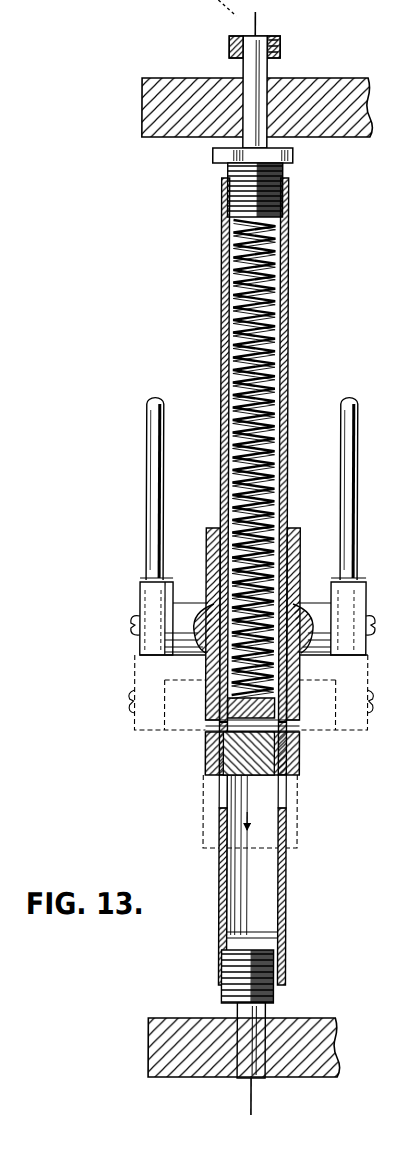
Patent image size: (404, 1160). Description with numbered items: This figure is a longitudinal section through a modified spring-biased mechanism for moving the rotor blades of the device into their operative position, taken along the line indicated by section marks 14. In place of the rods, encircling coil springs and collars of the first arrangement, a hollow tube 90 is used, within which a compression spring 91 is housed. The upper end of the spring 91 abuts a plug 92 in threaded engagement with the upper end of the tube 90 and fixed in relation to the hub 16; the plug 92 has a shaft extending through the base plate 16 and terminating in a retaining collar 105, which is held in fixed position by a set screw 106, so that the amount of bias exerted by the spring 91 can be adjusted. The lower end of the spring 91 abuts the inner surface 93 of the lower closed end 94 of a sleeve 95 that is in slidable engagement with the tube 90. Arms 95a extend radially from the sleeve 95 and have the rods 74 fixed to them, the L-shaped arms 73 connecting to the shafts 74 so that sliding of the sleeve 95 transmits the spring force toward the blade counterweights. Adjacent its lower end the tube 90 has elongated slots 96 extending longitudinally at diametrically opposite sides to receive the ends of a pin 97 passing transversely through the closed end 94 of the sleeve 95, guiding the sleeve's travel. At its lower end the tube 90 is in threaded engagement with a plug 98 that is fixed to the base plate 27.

The section line 14- 14 is at (250, 22).
The rotatable hub 16 is at (343, 90).
The circular plate 27 is at (307, 1032).
The L-shaped arms 73 is at (176, 607).
The shaft 74 is at (160, 488).
The hollow tube 90 is at (289, 335).
The compression spring 91 is at (266, 402).
The plug 92 is at (284, 174).
The inner surface 93 is at (223, 700).
The lower closed end 94 is at (211, 756).
The sleeve 95 is at (294, 542).
The arms 95a is at (325, 656).
The elongated slots 96 is at (282, 797).
The pin 97 is at (299, 731).
The plug 98 is at (279, 1001).
The retaining collar 105 is at (277, 36).
The set screw 106 is at (281, 46).